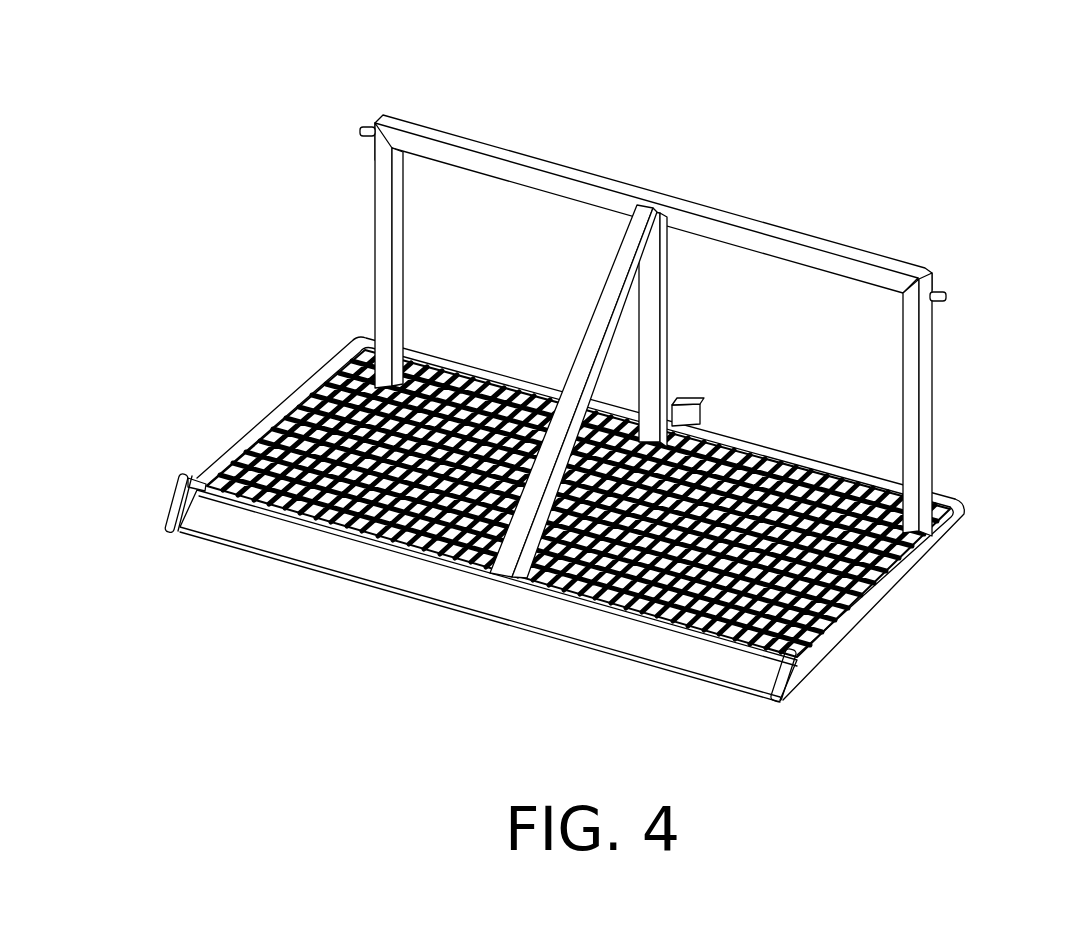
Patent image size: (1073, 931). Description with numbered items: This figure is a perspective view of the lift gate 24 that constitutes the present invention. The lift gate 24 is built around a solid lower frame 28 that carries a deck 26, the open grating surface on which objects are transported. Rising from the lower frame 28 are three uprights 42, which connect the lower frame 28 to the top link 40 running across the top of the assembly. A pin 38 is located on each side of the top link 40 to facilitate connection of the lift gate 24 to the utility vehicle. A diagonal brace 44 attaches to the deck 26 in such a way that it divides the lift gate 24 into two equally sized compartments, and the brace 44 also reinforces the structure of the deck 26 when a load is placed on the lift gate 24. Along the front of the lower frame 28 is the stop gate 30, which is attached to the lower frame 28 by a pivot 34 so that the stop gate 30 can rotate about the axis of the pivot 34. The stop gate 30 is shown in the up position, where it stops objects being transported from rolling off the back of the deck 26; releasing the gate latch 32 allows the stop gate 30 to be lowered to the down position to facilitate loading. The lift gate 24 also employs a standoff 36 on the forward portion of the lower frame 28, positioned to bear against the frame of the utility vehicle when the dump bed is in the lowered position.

The lift gate 24 is at (660, 145).
The deck 26 is at (290, 457).
The lower frame 28 is at (880, 598).
The stop gate 30 is at (533, 612).
The gate latch 32 is at (797, 670).
The pivot 34 is at (181, 532).
The standoff 36 is at (678, 398).
The pin 38 is at (362, 129).
The top link 40 is at (678, 206).
The uprights 42 is at (913, 412).
The brace 44 is at (627, 252).